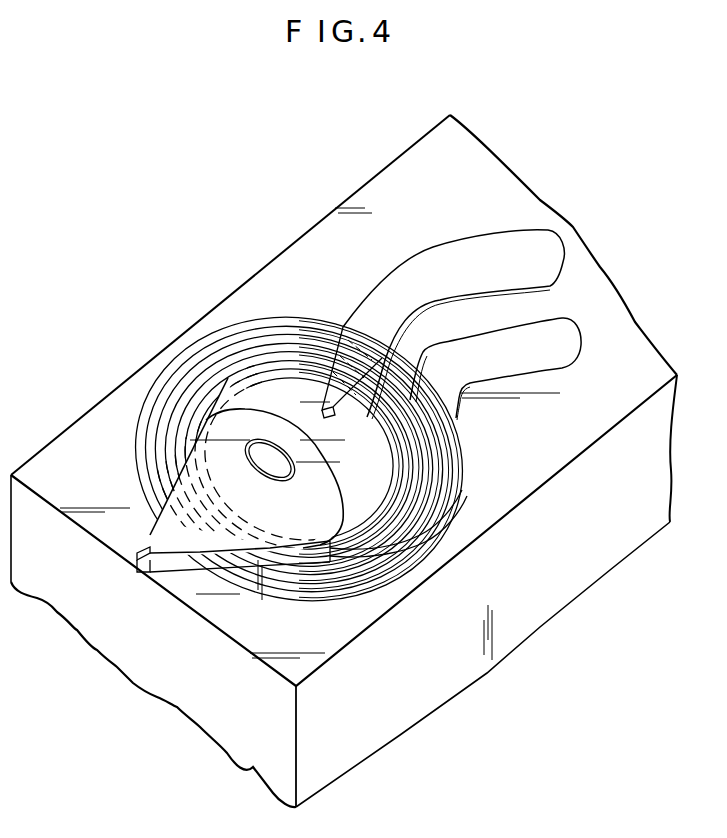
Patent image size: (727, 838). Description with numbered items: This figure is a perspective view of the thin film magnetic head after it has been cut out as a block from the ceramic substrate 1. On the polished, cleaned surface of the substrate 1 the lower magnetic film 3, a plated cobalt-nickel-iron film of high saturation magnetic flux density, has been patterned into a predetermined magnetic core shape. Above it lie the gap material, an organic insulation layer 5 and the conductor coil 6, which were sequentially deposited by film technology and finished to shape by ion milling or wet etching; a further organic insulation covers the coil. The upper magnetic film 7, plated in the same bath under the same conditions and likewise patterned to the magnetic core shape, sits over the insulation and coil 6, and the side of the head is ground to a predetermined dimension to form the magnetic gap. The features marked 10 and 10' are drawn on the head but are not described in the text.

The ceramic substrate 1 is at (387, 743).
The lower magnetic film 3 is at (188, 573).
The organic insulation layer 5 is at (202, 573).
The conductor coil 6 is at (390, 590).
The upper magnetic film 7 is at (152, 530).
The channel 10 is at (540, 354).
The channel 10' is at (466, 303).